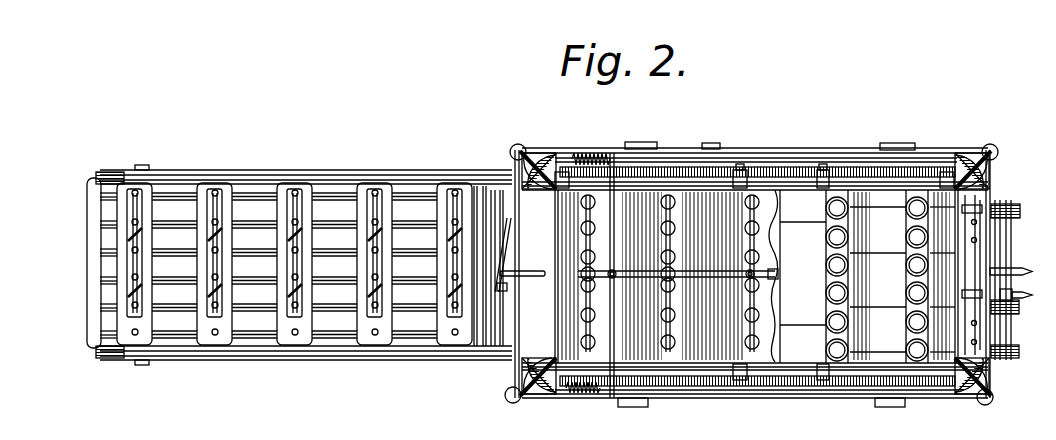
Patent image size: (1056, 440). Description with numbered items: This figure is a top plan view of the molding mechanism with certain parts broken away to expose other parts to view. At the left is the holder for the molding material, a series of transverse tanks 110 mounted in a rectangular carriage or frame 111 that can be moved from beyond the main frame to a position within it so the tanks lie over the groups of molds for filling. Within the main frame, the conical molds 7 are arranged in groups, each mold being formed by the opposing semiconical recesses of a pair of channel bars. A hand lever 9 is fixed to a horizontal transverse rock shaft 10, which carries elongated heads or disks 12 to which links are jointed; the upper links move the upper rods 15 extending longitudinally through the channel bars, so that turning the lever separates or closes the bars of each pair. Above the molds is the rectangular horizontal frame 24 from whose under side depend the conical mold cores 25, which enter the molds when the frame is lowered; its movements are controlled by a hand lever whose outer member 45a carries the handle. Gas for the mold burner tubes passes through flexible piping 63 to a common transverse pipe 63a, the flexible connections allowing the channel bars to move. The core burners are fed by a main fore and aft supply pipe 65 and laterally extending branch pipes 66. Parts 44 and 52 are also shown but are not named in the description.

The conical mold 7 is at (826, 210).
The hand lever 9 is at (1024, 296).
The rock shaft 10 is at (1024, 272).
The elongated head or disk 12 is at (1010, 216).
The upper rod 15 is at (884, 212).
The rectangular horizontal frame 24 is at (594, 188).
The conical mold core 25 is at (755, 273).
The wheel 44 is at (511, 152).
The outer member of hand lever 45a is at (957, 275).
The bracket 52 is at (648, 144).
The flexible piping 63 is at (598, 158).
The common transverse pipe 63a is at (612, 399).
The main supply pipe 65 is at (711, 271).
The branch pipe 66 is at (748, 224).
The transverse tank 110 is at (118, 290).
The carriage or frame 111 is at (240, 170).